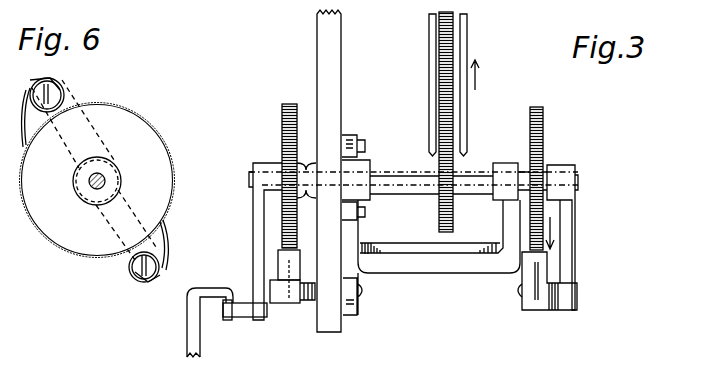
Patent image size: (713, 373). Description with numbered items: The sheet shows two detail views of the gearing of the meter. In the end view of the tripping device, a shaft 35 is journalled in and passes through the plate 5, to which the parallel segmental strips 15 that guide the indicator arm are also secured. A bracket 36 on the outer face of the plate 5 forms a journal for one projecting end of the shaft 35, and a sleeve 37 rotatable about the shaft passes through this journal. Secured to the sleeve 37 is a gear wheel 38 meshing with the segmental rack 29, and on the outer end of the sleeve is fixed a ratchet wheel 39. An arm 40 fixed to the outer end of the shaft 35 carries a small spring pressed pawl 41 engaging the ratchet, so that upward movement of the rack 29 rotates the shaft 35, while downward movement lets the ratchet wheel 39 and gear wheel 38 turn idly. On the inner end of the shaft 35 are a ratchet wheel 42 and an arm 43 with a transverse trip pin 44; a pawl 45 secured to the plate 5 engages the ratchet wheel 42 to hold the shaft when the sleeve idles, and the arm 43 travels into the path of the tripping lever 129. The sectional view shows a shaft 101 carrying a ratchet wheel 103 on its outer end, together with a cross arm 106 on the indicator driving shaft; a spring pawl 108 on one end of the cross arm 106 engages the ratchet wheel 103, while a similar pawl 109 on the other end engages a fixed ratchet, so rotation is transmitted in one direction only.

In FIG. 3, the plate 5 is at (342, 90).
In FIG. 3, the parallel segmental strips 15 is at (429, 42).
In FIG. 3, the segmental rack 29 is at (453, 90).
In FIG. 3, the shaft 35 is at (410, 197).
In FIG. 3, the bracket 36 is at (455, 273).
In FIG. 3, the sleeve 37 is at (483, 163).
In FIG. 3, the gear wheel 38 is at (453, 210).
In FIG. 3, the ratchet wheel 39 is at (544, 135).
In FIG. 3, the arm 40 is at (573, 230).
In FIG. 3, the spring pressed pawl 41 is at (532, 310).
In FIG. 3, the ratchet wheel 42 is at (282, 132).
In FIG. 3, the arm 43 is at (253, 242).
In FIG. 3, the transverse trip pin 44 is at (246, 318).
In FIG. 3, the pawl 45 is at (278, 268).
In FIG. 3, the tripping lever 129 is at (187, 302).
In FIG. 6, the shaft 101 is at (104, 176).
In FIG. 6, the ratchet wheel 103 is at (142, 118).
In FIG. 6, the cross arm 106 is at (104, 220).
In FIG. 6, the spring pawl 108 is at (128, 274).
In FIG. 6, the pawl 109 is at (62, 90).